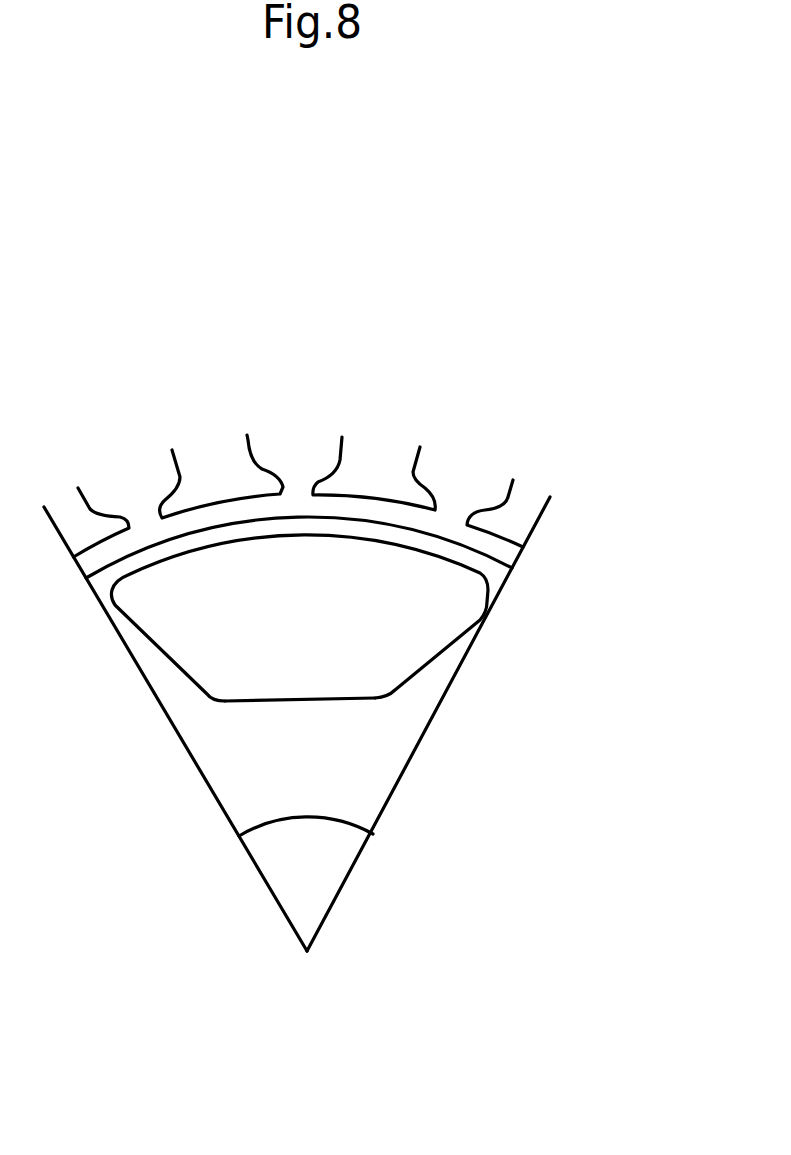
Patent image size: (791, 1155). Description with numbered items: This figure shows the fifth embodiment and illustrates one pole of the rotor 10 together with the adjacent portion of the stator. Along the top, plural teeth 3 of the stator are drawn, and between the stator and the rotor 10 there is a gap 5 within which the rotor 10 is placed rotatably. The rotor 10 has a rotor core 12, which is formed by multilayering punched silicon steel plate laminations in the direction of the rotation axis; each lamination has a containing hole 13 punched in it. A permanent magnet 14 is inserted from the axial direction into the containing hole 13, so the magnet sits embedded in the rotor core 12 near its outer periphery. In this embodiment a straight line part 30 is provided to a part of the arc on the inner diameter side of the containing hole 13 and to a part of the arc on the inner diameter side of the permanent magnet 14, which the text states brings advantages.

The teeth 3 is at (400, 443).
The gap 5 is at (400, 517).
The rotor 10 is at (483, 538).
The rotor core 12 is at (365, 763).
The containing hole 13 is at (300, 534).
The permanent magnet 14 is at (375, 635).
The straight line part 30 is at (290, 702).